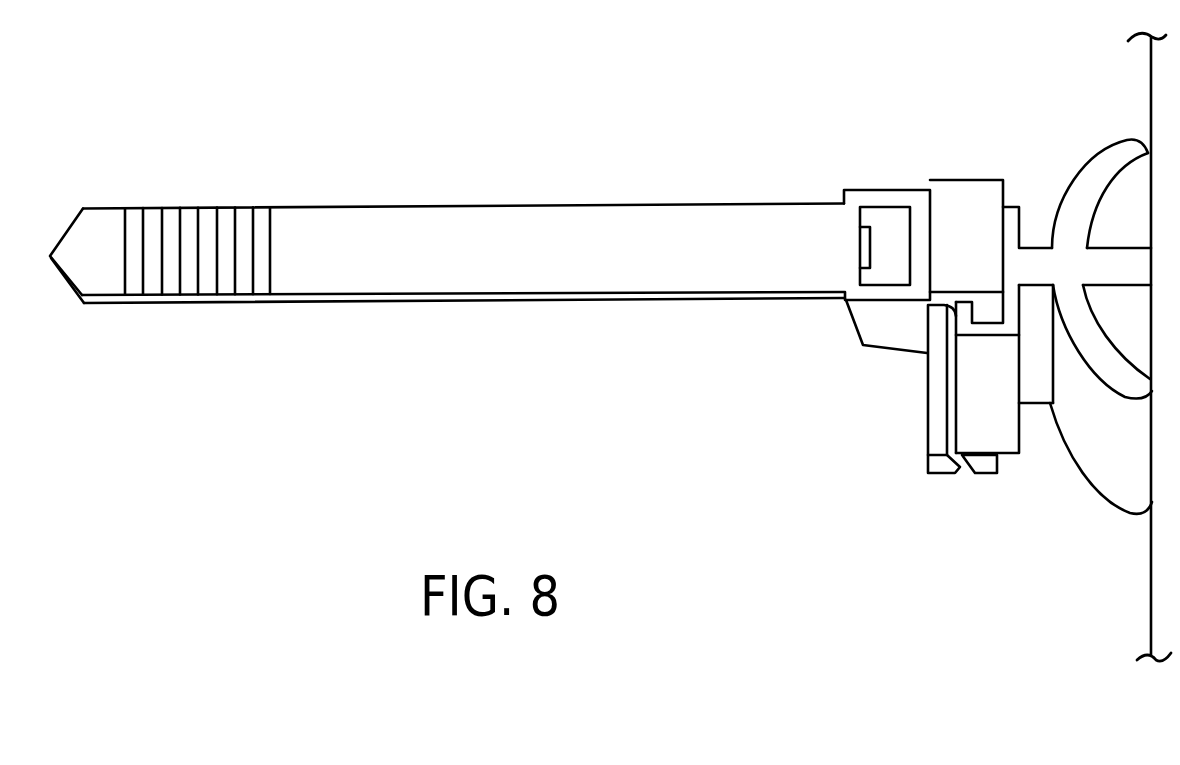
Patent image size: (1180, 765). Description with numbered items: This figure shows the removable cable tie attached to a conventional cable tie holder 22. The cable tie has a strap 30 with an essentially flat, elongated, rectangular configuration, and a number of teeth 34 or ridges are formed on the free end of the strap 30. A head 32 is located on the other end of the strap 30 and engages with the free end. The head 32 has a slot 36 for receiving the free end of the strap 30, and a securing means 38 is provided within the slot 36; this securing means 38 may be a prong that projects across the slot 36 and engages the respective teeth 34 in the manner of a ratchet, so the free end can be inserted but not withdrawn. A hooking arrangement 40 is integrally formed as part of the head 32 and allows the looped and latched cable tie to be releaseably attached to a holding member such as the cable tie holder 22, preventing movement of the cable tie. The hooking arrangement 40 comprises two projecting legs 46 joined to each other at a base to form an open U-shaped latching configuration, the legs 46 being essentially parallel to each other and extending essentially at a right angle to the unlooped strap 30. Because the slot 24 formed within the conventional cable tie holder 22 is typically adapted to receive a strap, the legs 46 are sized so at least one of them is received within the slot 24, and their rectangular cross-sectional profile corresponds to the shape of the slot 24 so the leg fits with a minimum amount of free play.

The cable tie holder 22 is at (1075, 207).
The slot 24 is at (1001, 214).
The strap 30 is at (315, 241).
The head 32 is at (957, 207).
The teeth 34 is at (126, 207).
The slot 36 is at (890, 228).
The securing means 38 is at (872, 254).
The hooking arrangement 40 is at (918, 474).
The projecting legs 46 is at (933, 408).